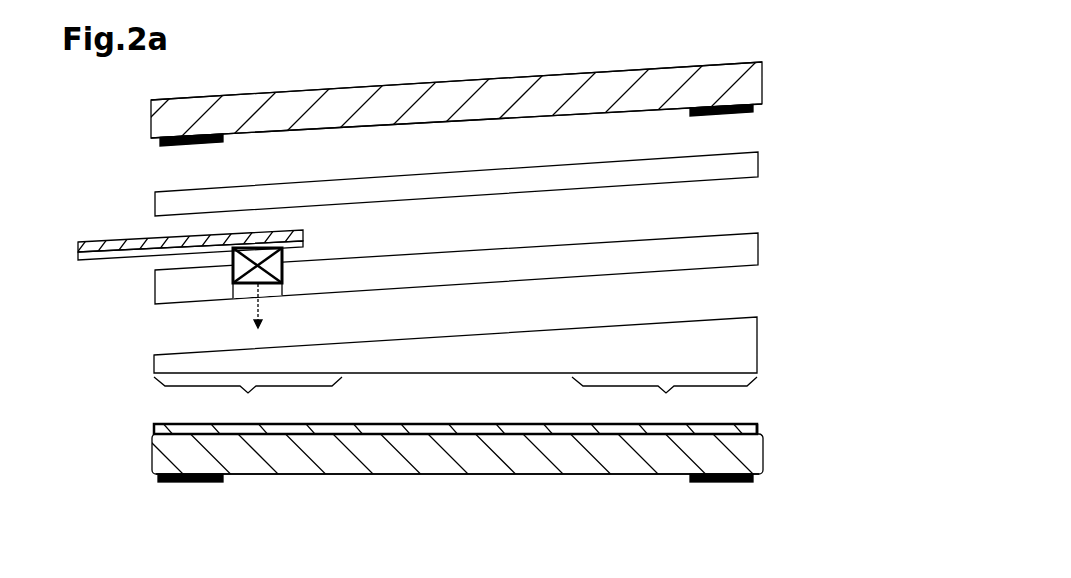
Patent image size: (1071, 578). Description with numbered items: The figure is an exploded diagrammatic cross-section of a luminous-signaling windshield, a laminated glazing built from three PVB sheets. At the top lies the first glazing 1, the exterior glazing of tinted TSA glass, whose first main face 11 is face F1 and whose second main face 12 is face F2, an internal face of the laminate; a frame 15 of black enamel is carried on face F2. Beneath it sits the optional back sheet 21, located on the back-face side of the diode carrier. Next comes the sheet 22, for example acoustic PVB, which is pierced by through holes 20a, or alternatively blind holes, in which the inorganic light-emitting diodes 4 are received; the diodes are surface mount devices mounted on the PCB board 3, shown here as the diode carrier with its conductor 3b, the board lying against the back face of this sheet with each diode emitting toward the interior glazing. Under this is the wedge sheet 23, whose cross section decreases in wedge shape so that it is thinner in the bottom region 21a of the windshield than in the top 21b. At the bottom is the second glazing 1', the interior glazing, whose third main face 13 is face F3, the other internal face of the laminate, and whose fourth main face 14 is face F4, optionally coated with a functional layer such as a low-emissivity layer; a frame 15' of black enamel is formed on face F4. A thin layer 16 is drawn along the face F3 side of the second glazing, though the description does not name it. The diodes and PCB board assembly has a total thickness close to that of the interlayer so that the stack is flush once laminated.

The first glazing 1 is at (493, 83).
The first main face 11 is at (455, 80).
The second main face 12 is at (483, 118).
The frame made of black enamel 15 is at (406, 137).
The back sheet 21 is at (153, 208).
The PCB board 3 is at (102, 243).
The conductor 3b is at (106, 259).
The central sheet 22 is at (152, 290).
The inorganic light-emitting diodes 4 is at (250, 287).
The through holes 20a is at (274, 290).
The wedge sheet 23 is at (153, 362).
The bottom region 21a is at (248, 401).
The top 21b is at (664, 401).
The third main face 13 is at (763, 428).
The metallization layer 16 is at (327, 435).
The second glazing 1' is at (467, 463).
The fourth main face 14 is at (545, 477).
The frame made of black enamel 15' is at (446, 515).